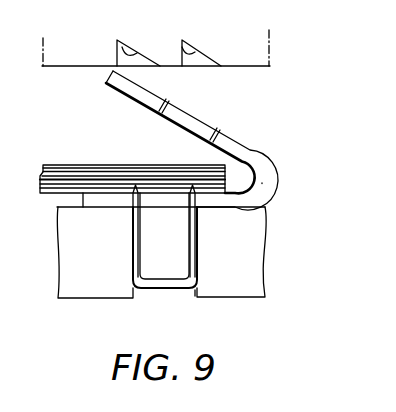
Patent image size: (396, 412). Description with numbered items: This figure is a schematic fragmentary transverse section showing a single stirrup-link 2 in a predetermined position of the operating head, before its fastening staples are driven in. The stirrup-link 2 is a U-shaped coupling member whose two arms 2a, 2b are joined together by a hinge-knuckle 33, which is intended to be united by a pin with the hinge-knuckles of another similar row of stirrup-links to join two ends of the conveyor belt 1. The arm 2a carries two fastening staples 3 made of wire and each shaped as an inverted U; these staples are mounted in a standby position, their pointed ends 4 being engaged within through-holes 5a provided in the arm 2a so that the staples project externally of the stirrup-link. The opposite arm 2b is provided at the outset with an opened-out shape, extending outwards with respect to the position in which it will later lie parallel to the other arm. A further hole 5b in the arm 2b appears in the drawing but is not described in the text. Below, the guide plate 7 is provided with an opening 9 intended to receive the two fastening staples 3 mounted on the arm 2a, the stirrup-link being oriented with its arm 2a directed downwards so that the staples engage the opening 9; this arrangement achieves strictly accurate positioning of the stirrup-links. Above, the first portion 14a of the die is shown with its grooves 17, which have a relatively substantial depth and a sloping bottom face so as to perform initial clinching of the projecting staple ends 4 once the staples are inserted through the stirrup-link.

The conveyor belt 1 is at (42, 178).
The stirrup-link 2 is at (164, 161).
The stirrup-link arm 2a is at (100, 202).
The stirrup-link arm 2b is at (112, 84).
The fastening staple 3 is at (158, 285).
The pointed end 4 is at (159, 205).
The through-hole 5a is at (134, 214).
The upper pins 5b is at (165, 106).
The guide plate 7 is at (248, 278).
The opening 9 is at (191, 290).
The first portion of the die 14a is at (252, 52).
The groove 17 is at (180, 44).
The hinge-knuckle 33 is at (262, 184).